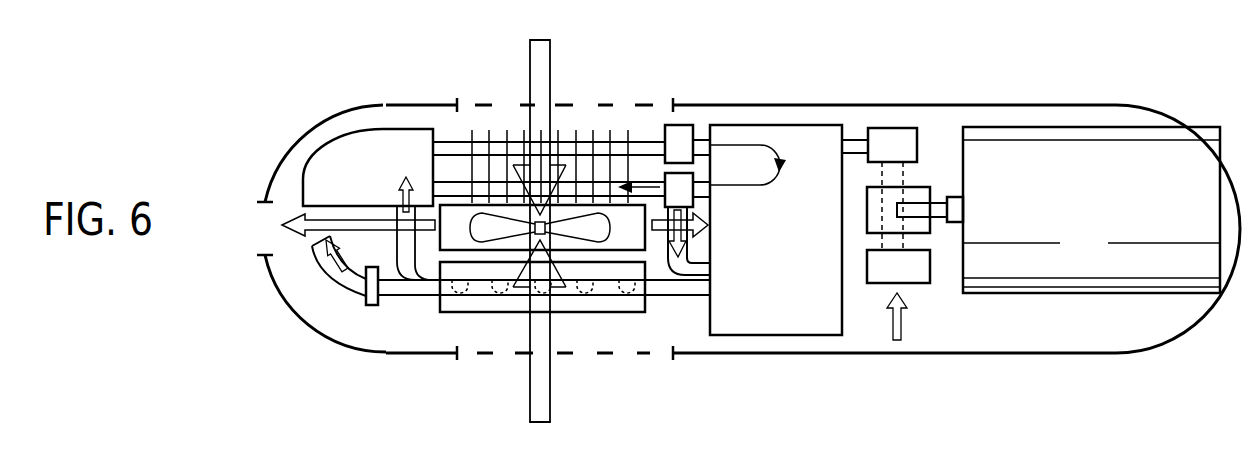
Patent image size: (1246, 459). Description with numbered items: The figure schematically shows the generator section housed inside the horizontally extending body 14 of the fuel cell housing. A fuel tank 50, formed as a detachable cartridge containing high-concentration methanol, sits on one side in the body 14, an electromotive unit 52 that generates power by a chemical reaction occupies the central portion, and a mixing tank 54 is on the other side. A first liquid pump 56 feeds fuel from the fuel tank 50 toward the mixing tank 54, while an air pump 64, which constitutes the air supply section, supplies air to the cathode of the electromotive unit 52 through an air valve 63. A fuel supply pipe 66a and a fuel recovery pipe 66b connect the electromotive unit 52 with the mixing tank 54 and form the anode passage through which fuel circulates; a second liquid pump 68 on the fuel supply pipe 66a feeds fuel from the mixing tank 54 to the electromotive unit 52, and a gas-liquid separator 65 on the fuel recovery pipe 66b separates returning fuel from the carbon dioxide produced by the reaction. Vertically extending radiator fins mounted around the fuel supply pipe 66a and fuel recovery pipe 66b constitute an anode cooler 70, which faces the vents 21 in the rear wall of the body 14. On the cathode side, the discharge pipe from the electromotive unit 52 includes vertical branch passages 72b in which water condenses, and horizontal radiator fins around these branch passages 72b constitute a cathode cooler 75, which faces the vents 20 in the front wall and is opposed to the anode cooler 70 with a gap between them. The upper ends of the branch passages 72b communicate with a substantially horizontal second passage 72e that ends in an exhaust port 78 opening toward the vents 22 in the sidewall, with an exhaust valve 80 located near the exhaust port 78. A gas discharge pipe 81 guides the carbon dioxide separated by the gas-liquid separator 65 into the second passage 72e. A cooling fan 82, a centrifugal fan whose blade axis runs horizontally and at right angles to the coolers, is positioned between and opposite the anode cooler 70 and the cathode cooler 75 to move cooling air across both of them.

The body 14 is at (1067, 353).
The vents 20 is at (622, 357).
The vents 21 is at (468, 105).
The vents 22 is at (265, 221).
The fuel tank 50 is at (1100, 155).
The electromotive unit 52 is at (798, 337).
The mixing tank 54 is at (345, 152).
The first liquid pump 56 is at (923, 187).
The air valve 63 is at (897, 140).
The air pump 64 is at (918, 285).
The gas-liquid separator 65 is at (693, 199).
The fuel supply pipe 66a is at (585, 143).
The fuel recovery pipe 66b is at (620, 180).
The second liquid pump 68 is at (690, 125).
The anode cooler 70 is at (501, 108).
The branch passages 72b is at (587, 298).
The second passage 72e is at (407, 300).
The cathode cooler 75 is at (458, 316).
The exhaust port 78 is at (312, 252).
The exhaust valve 80 is at (370, 305).
The gas discharge pipe 81 is at (690, 258).
The cooling fan 82 is at (460, 208).